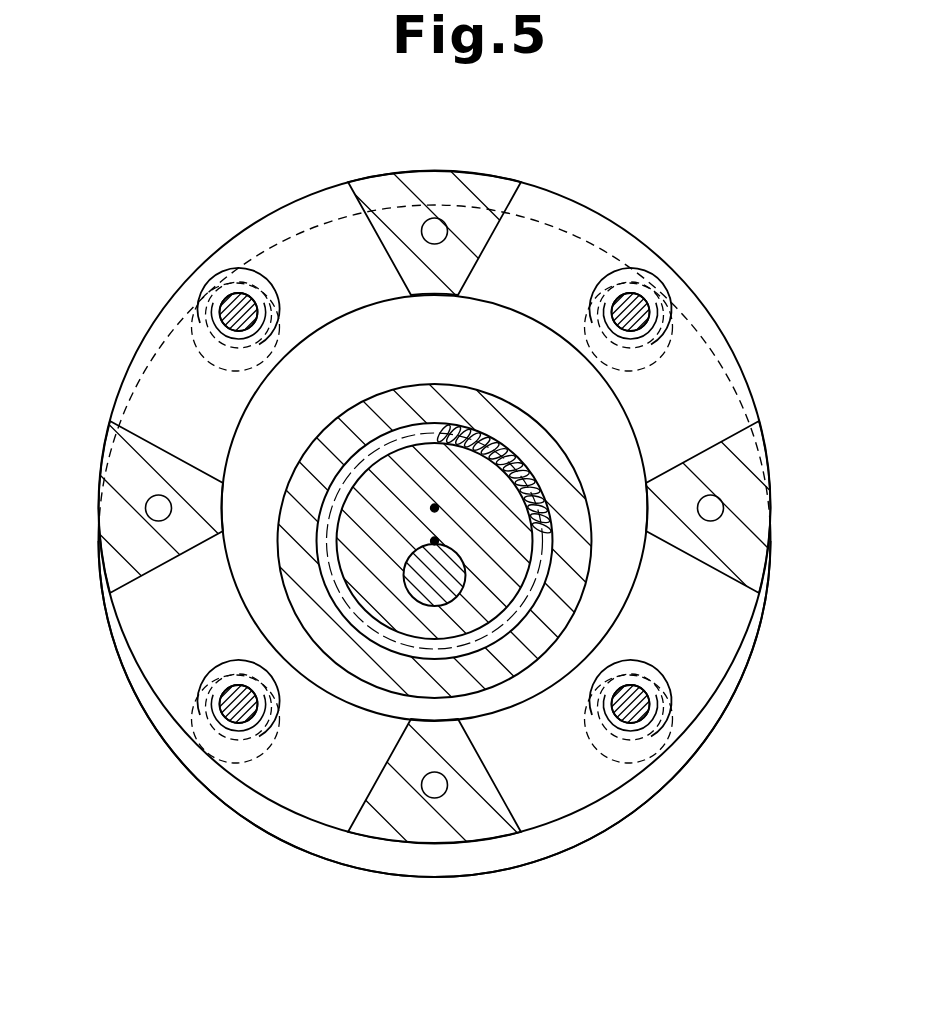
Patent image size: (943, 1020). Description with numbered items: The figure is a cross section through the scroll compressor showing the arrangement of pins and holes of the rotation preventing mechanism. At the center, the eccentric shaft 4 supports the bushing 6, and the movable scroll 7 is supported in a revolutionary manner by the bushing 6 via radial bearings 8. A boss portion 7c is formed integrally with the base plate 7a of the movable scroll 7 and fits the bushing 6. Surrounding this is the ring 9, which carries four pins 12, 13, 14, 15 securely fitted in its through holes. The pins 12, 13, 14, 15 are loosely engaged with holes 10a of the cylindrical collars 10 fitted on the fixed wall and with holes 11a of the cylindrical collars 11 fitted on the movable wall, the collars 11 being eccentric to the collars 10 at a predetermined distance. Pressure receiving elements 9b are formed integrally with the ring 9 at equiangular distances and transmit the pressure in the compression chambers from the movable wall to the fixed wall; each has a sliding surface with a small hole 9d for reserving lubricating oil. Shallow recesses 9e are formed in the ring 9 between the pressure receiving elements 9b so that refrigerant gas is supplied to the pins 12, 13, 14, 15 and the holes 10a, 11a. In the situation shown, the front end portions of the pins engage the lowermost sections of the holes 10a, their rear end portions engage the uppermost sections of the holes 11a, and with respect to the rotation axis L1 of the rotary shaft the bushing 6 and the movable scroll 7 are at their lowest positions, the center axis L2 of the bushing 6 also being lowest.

The eccentric shaft 4 is at (466, 576).
The bushing 6 is at (320, 545).
The movable scroll 7 is at (497, 877).
The base plate 7a is at (547, 856).
The boss portion 7c is at (462, 396).
The radial bearings 8 is at (505, 430).
The ring 9 is at (564, 194).
The pressure receiving elements 9b is at (429, 179).
The small hole 9d is at (444, 240).
The shallow recesses 9e is at (326, 240).
The cylindrical collars 10 is at (213, 275).
The holes 10a is at (244, 262).
The cylindrical collars 11 is at (197, 330).
The holes 11a is at (194, 350).
The pin 12 is at (260, 302).
The pin 13 is at (613, 320).
The pin 14 is at (265, 722).
The pin 15 is at (603, 714).
The rotation axis L1 is at (432, 507).
The center axis L2 is at (437, 540).